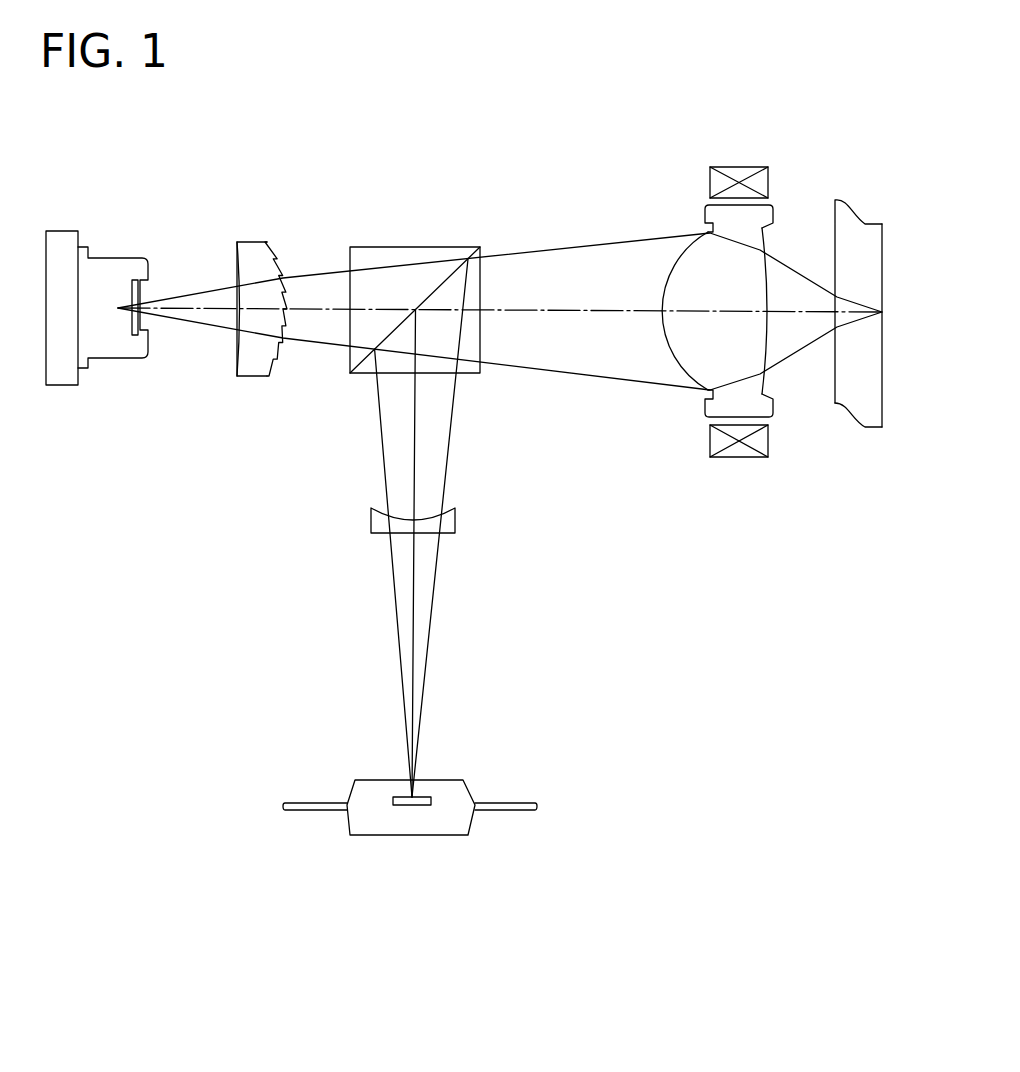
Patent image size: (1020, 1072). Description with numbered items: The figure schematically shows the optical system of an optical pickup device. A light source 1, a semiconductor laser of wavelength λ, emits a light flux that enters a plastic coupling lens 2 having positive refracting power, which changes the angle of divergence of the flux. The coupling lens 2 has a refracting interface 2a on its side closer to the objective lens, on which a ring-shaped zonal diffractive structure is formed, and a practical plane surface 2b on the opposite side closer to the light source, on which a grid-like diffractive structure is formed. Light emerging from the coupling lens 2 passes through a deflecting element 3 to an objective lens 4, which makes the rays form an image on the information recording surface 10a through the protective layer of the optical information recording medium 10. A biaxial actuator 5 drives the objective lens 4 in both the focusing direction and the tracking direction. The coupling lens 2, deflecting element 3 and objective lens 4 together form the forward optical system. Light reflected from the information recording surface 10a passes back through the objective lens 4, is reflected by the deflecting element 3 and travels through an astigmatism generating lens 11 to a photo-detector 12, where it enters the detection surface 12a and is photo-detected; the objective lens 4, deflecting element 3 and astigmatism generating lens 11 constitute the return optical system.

The light source 1 is at (108, 347).
The coupling lens 2 is at (241, 315).
The refracting interface 2a is at (267, 377).
The practical plane surface 2b is at (235, 270).
The deflecting element 3 is at (410, 247).
The objective lens 4 is at (707, 215).
The biaxial actuator 5 is at (735, 458).
The optical information recording medium 10 is at (864, 337).
The information recording surface 10a is at (882, 407).
The astigmatism generating lens 11 is at (455, 517).
The photo-detector 12 is at (410, 807).
The detection surface 12a is at (422, 788).